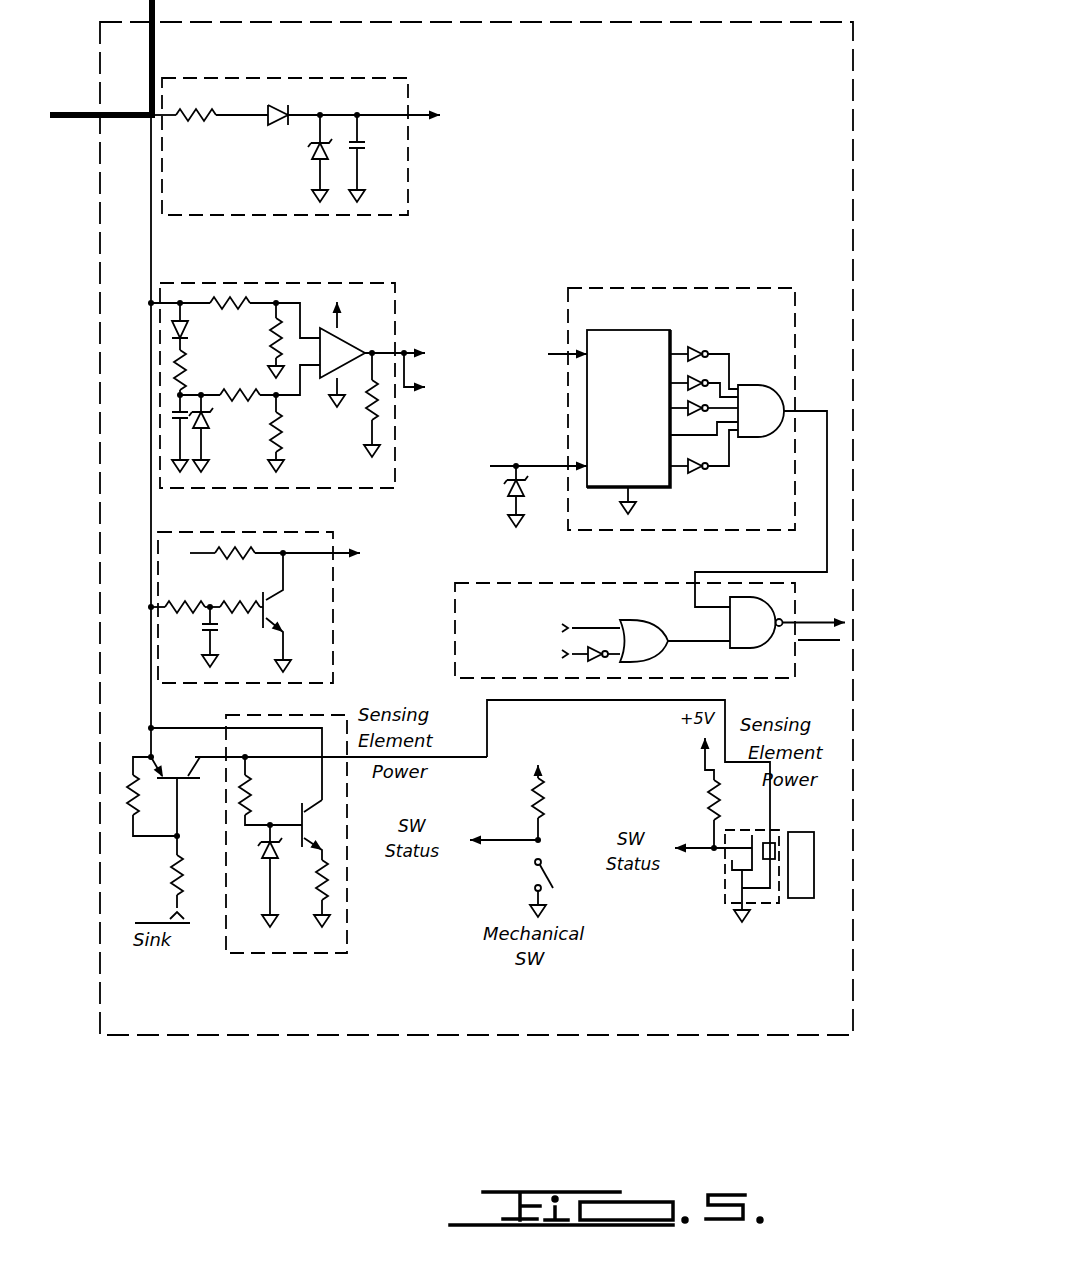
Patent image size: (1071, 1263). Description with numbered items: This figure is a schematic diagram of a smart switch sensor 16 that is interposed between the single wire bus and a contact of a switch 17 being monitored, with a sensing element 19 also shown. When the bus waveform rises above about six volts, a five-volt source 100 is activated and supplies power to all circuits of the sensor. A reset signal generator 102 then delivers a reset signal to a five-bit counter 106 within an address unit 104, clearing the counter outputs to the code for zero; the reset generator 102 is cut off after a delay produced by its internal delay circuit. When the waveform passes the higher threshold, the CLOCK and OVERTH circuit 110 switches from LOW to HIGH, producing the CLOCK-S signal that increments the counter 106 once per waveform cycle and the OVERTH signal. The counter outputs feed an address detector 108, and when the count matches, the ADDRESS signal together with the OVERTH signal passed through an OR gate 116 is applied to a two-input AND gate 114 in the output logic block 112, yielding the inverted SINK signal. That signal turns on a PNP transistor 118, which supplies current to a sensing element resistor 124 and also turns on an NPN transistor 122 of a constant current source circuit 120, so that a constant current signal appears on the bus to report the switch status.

The smart switch sensor 16 is at (868, 13).
The 5 VDC source 100 is at (408, 86).
The CLOCK and OVERTH circuit 110 is at (395, 292).
The address unit 104 is at (630, 425).
The 5-bit counter 106 is at (632, 338).
The address detector 108 is at (752, 388).
The reset signal generator 102 is at (335, 607).
The sink logic circuit 112 is at (650, 616).
The OR gate 116 is at (644, 632).
The 2-input AND gate 114 is at (749, 637).
The PNP transistor 118 is at (197, 792).
The NPN transistor 122 is at (300, 801).
The constant current source circuit 120 is at (323, 875).
The sensing element resistor 124 is at (535, 784).
The switch 17 is at (554, 882).
The sensing element 19 is at (775, 830).